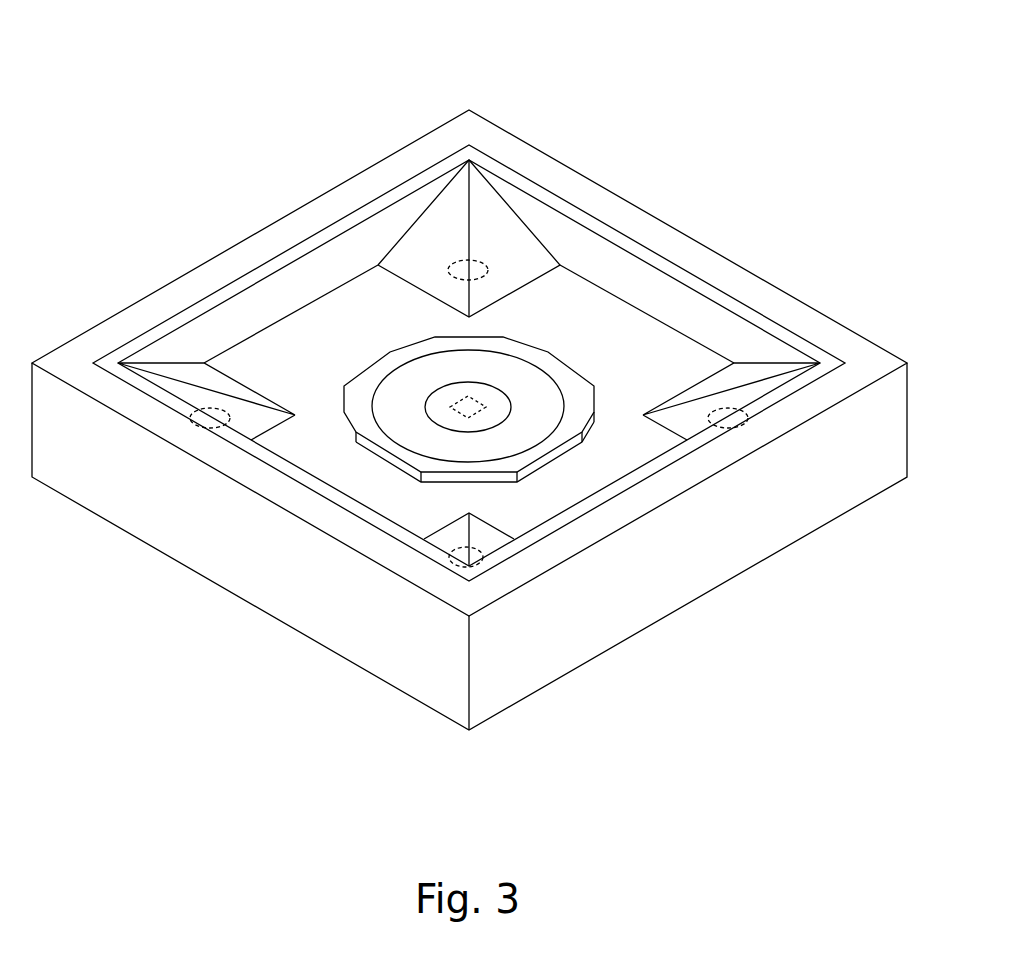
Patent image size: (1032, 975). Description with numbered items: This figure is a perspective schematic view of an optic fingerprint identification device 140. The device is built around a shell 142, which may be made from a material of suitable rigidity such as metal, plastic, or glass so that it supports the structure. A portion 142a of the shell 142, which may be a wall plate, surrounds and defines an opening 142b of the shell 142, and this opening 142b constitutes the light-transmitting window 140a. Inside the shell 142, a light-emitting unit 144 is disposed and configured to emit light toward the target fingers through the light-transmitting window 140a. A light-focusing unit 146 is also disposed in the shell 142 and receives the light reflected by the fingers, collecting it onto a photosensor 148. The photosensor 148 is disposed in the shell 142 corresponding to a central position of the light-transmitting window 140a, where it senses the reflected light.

The optic fingerprint identification device 140 is at (167, 43).
The light-transmitting window 140a is at (515, 172).
The shell 142 is at (882, 450).
The portion of the shell 142a is at (591, 197).
The opening 142b is at (638, 242).
The light-emitting unit 144 is at (459, 257).
The light-focusing unit 146 is at (560, 374).
The photosensor 148 is at (469, 403).